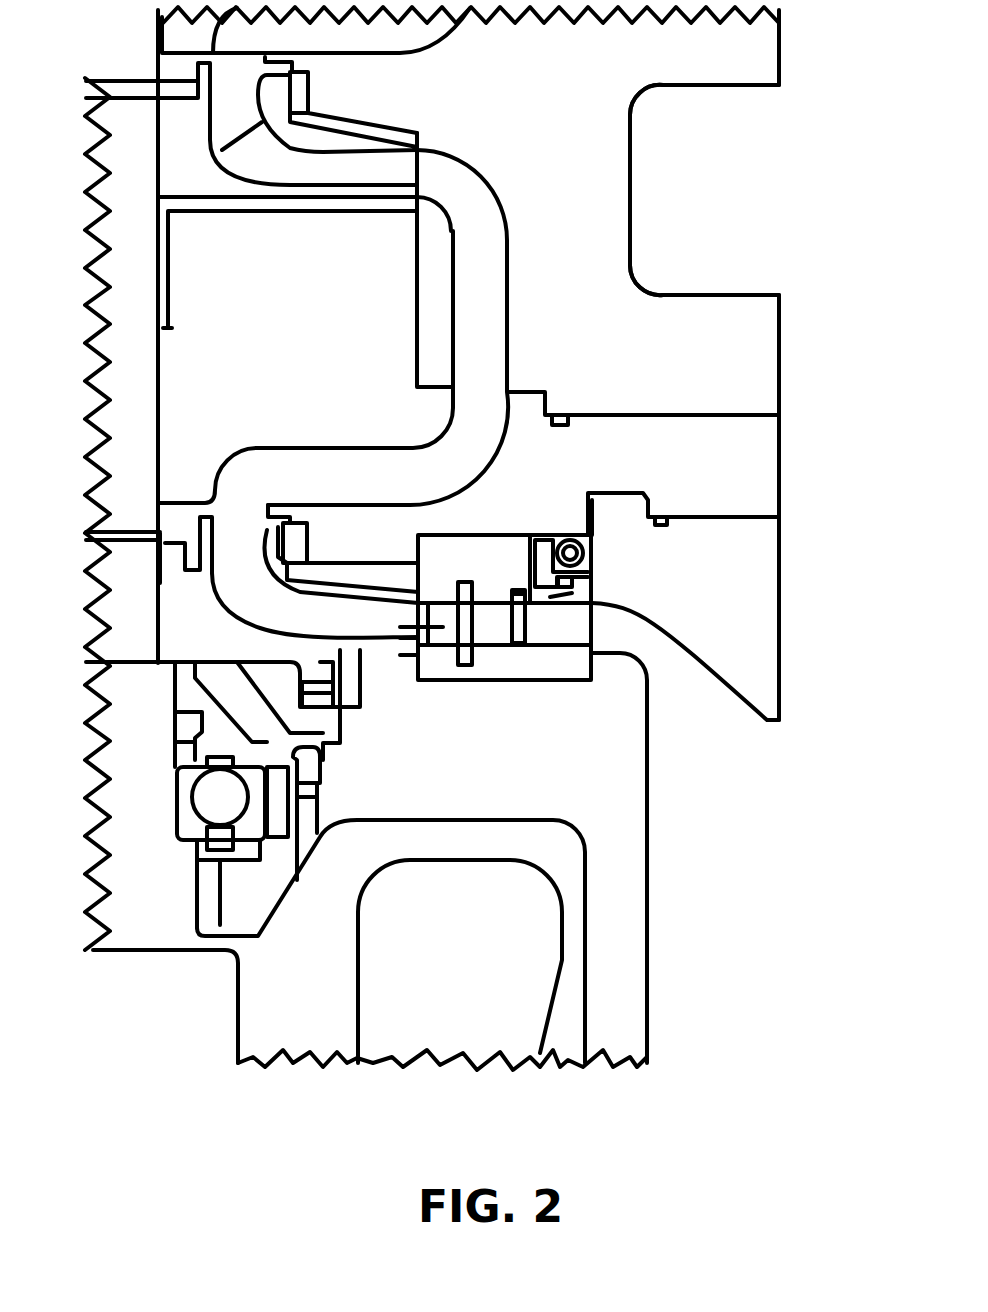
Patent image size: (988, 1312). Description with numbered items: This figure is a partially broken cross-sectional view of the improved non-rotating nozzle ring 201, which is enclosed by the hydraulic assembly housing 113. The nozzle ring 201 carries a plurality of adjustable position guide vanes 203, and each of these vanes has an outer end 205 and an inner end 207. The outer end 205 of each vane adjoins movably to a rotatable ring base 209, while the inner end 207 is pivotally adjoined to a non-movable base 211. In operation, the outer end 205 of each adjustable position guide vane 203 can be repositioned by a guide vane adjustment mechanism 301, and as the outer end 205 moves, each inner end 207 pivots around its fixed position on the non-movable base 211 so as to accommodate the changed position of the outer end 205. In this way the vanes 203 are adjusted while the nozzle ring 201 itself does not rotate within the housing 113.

The hydraulic assembly housing 113 is at (595, 175).
The non-rotating nozzle ring 201 is at (622, 632).
The adjustable position guide vanes 203 is at (555, 627).
The outer end 205 is at (497, 627).
The inner end 207 is at (418, 623).
The rotatable ring base 209 is at (592, 590).
The non-movable base 211 is at (440, 663).
The guide vane adjustment mechanism 301 is at (588, 552).